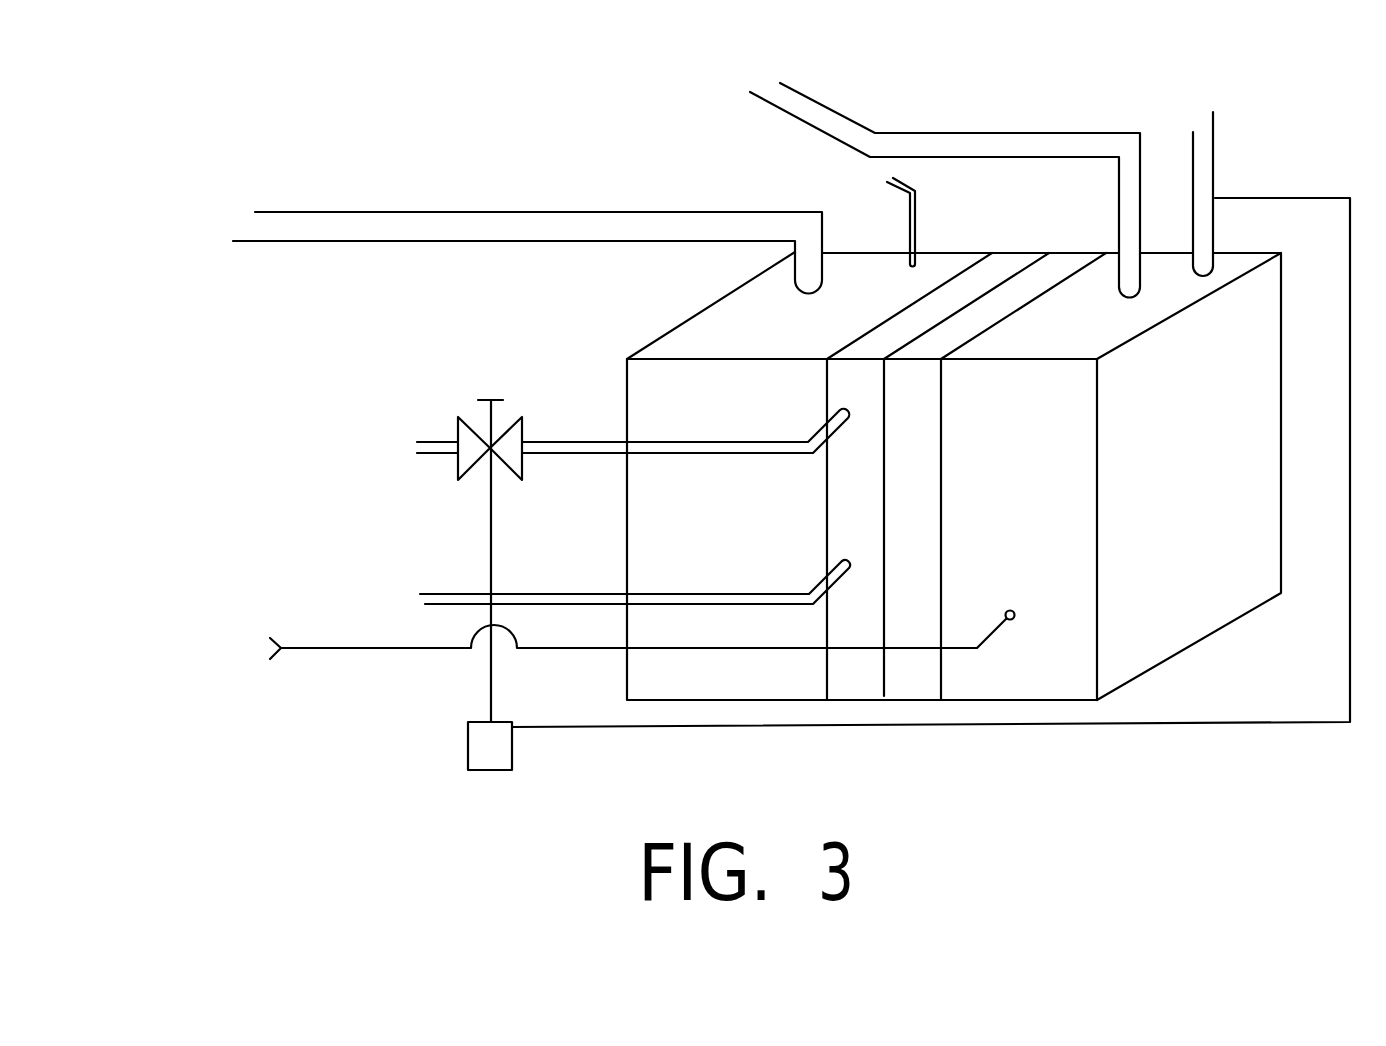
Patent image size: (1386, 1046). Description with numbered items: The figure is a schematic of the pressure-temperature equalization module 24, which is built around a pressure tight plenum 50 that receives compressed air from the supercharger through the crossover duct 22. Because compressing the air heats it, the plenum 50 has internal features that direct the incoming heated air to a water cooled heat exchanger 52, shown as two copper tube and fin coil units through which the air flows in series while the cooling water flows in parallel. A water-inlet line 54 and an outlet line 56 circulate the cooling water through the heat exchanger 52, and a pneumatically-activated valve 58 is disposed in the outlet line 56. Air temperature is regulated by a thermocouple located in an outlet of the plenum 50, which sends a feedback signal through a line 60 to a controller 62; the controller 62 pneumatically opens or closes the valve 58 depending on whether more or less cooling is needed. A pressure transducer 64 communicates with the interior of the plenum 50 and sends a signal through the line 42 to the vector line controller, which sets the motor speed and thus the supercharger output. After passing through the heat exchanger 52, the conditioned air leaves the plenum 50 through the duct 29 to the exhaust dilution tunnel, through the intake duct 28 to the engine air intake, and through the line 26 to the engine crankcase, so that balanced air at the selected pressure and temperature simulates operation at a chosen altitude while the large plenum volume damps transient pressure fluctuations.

The crossover duct 22 is at (487, 243).
The pressure-temperature equalization module 24 is at (559, 100).
The line 26 is at (918, 232).
The intake duct 28 is at (958, 130).
The duct 29 is at (1215, 175).
The line 42 is at (357, 648).
The pressure tight plenum 50 is at (747, 565).
The water cooled heat exchanger 52 is at (950, 552).
The water-inlet line 54 is at (553, 603).
The outlet line 56 is at (562, 438).
The pneumatically-activated valve 58 is at (477, 425).
The line 60 is at (1135, 722).
The controller 62 is at (480, 775).
The pressure transducer 64 is at (1008, 610).